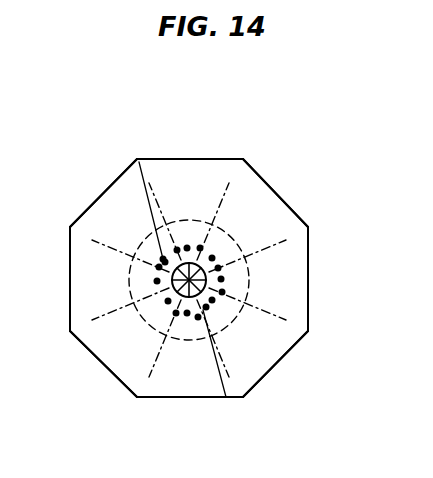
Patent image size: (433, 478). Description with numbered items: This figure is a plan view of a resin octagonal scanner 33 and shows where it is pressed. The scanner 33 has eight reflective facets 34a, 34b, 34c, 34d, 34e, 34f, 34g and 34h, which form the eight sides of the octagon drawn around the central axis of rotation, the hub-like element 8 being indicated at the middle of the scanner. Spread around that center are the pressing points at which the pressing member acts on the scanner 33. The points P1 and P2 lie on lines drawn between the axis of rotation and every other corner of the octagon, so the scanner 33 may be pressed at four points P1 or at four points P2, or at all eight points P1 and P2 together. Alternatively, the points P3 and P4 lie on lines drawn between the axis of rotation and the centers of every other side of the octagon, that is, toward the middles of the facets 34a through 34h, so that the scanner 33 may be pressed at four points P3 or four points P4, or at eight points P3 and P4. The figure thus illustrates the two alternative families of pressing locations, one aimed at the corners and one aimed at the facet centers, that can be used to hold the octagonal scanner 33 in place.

The octagonal scanner 33 is at (174, 84).
The reflective facet 34a is at (285, 202).
The reflective facet 34b is at (308, 276).
The reflective facet 34c is at (277, 362).
The reflective facet 34d is at (201, 398).
The reflective facet 34e is at (83, 345).
The reflective facet 34f is at (70, 279).
The reflective facet 34g is at (85, 212).
The reflective facet 34h is at (206, 159).
The central hub 8 is at (210, 302).
The pressing point P1 is at (177, 250).
The pressing point P2 is at (212, 258).
The pressing point P3 is at (187, 248).
The pressing point P4 is at (200, 248).